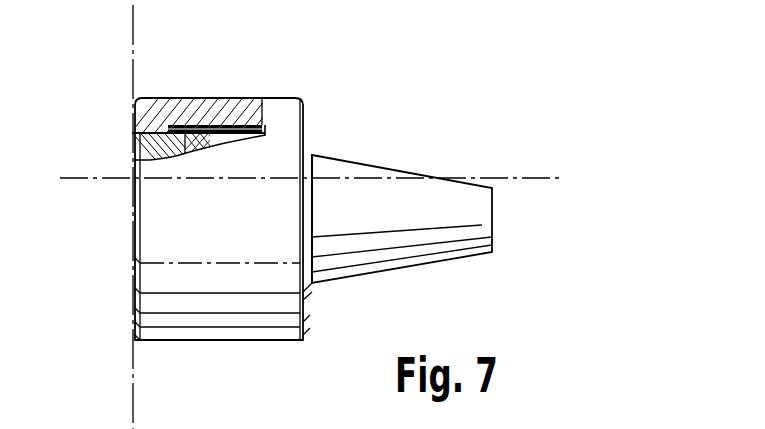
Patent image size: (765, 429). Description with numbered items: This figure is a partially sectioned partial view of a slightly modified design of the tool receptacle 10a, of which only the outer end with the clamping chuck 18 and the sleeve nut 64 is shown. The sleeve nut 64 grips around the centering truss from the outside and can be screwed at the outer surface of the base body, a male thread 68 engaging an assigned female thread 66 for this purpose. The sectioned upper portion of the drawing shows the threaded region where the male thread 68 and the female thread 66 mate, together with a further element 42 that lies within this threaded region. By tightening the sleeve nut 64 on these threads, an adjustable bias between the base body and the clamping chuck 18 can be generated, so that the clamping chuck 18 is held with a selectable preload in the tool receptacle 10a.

The tool receptacle 10a is at (355, 125).
The clamping chuck 18 is at (425, 195).
The sealing ring 42 is at (202, 133).
The sleeve nut 64 is at (283, 117).
The female thread 66 is at (165, 112).
The male thread 68 is at (140, 135).